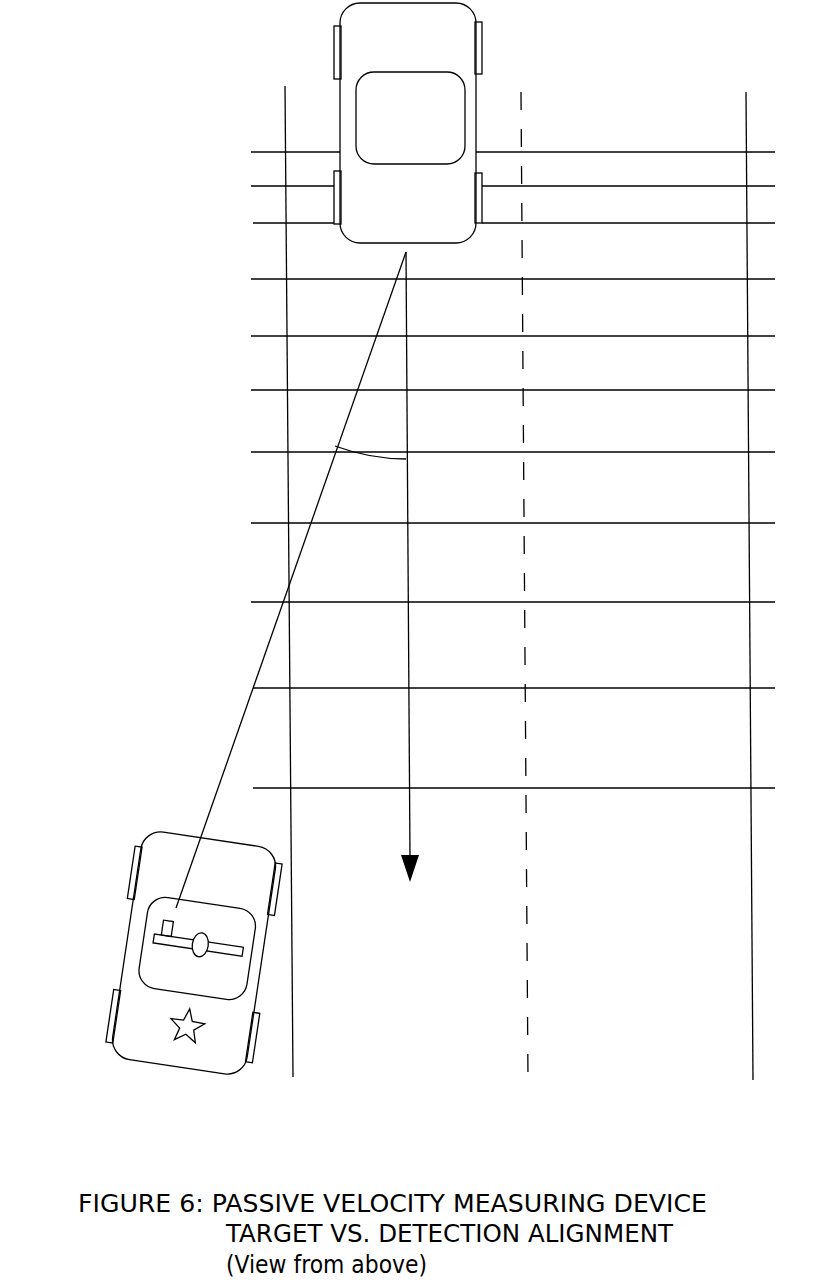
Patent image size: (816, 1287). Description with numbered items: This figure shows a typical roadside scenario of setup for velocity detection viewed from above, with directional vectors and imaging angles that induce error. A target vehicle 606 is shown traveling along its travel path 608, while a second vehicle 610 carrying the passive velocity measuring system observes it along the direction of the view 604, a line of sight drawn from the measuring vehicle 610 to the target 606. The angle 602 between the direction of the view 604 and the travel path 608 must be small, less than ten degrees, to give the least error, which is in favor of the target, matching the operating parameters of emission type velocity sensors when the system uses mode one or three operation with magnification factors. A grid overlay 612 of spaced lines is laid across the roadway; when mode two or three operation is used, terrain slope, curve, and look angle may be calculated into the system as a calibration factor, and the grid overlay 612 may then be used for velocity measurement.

The angle 602 is at (364, 490).
The direction of the view 604 is at (230, 702).
The target vehicle 606 is at (310, 199).
The travel path 608 is at (425, 623).
The vehicle carrying passive velocity measuring device 610 is at (120, 868).
The grid overlay 612 is at (600, 213).